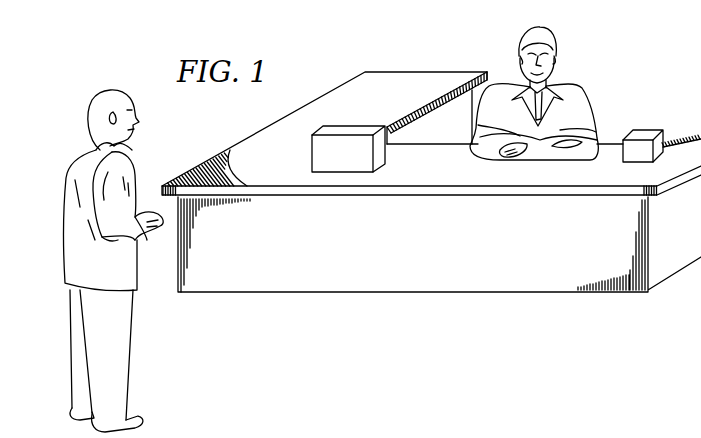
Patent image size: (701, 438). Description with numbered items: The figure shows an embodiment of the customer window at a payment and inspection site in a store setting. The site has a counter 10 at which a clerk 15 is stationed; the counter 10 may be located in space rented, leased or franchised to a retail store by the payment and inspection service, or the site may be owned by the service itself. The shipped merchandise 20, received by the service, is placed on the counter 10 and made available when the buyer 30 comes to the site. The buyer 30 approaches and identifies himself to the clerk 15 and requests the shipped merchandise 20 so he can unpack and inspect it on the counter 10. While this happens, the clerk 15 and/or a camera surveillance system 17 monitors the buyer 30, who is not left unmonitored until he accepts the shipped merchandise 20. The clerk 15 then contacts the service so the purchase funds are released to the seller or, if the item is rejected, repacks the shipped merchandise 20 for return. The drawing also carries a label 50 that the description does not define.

The counter 10 is at (424, 72).
The clerk 15 is at (567, 80).
The camera surveillance system 17 is at (650, 128).
The shipped merchandise 20 is at (355, 127).
The buyer 30 is at (63, 226).
The transaction area / desk body 50 is at (467, 316).